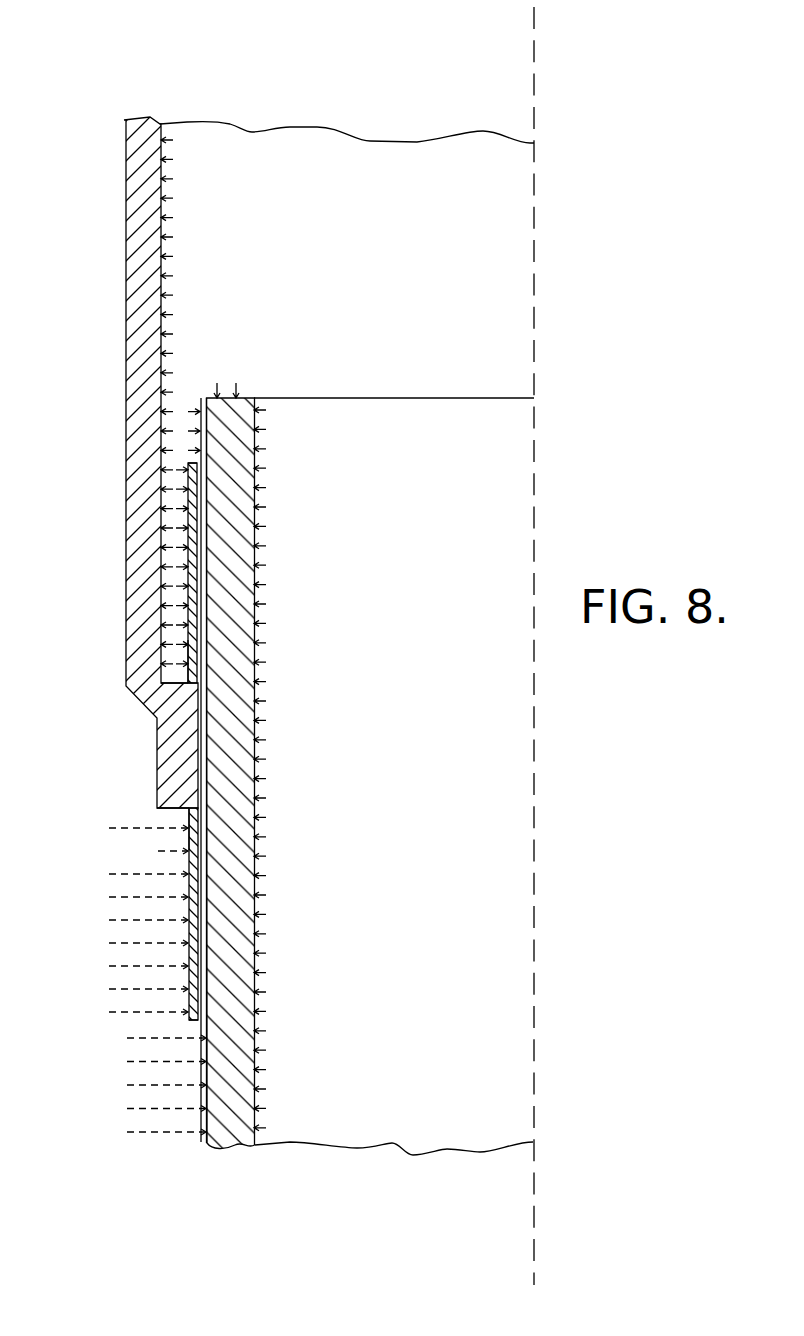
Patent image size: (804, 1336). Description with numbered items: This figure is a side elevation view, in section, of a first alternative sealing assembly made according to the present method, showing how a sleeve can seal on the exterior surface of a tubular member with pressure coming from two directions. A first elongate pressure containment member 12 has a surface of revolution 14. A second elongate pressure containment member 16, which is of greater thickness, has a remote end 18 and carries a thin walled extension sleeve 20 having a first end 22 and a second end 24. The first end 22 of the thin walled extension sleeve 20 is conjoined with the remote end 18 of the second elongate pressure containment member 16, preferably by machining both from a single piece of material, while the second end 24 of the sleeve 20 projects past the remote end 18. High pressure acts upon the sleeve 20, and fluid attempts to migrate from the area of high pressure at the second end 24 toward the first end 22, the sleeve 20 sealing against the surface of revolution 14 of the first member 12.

The first elongate pressure containment member 12 is at (248, 652).
The surface of revolution 14 is at (198, 528).
The second elongate pressure containment member 16 is at (125, 333).
The remote end 18 is at (177, 682).
The thin walled extension sleeve 20 is at (190, 560).
The first end 22 is at (187, 667).
The second end 24 is at (190, 465).